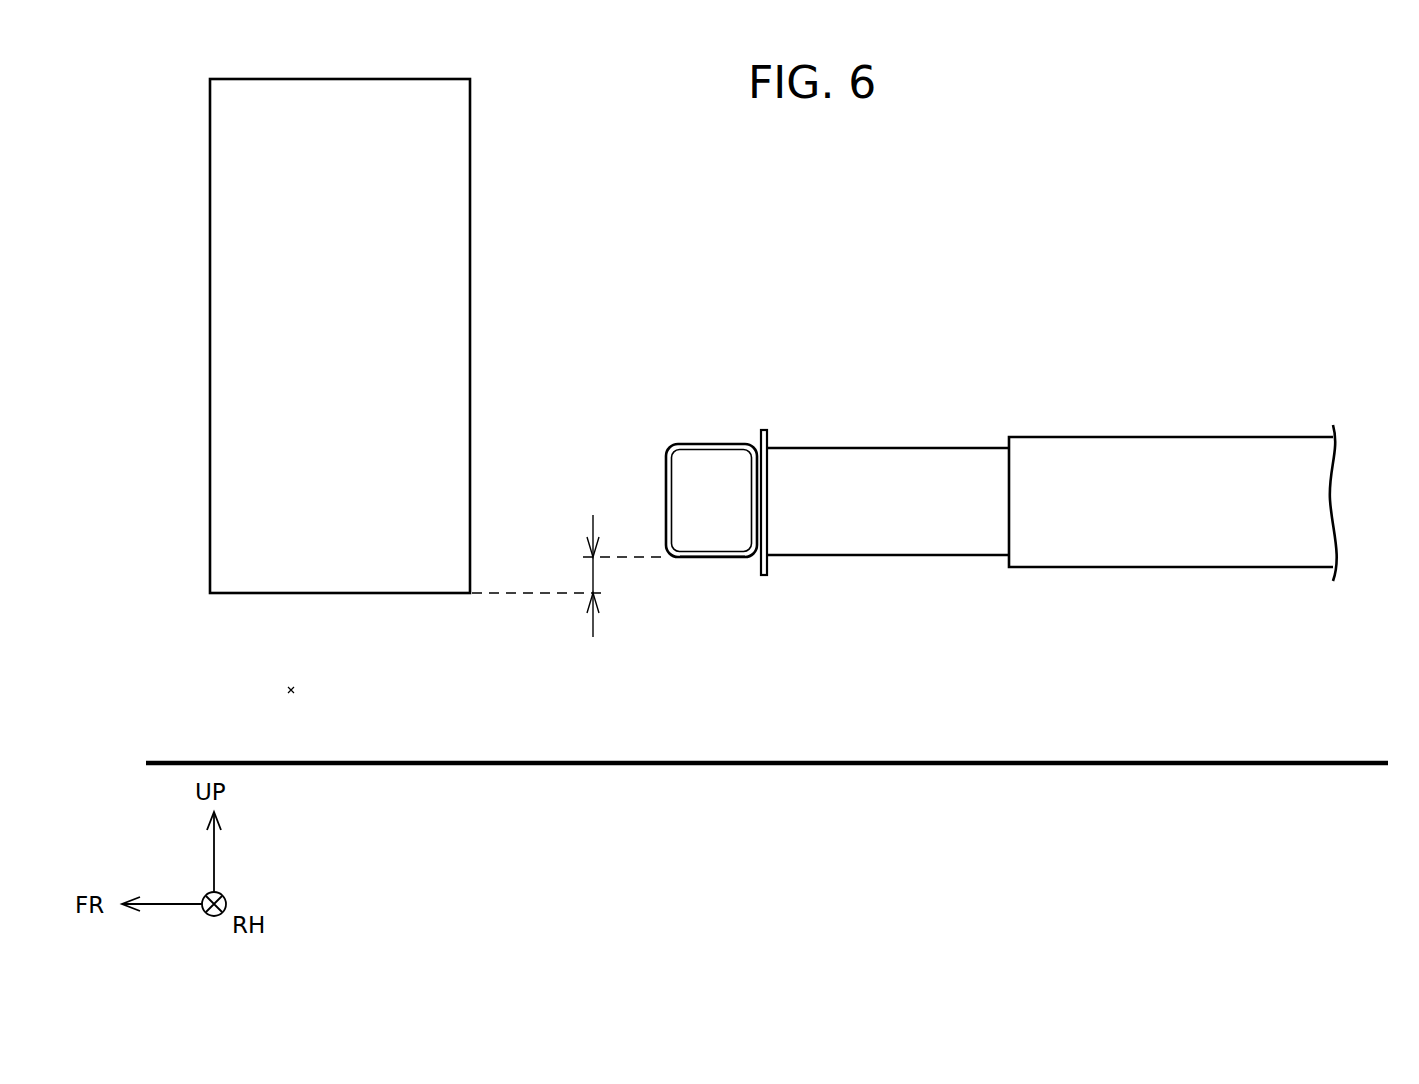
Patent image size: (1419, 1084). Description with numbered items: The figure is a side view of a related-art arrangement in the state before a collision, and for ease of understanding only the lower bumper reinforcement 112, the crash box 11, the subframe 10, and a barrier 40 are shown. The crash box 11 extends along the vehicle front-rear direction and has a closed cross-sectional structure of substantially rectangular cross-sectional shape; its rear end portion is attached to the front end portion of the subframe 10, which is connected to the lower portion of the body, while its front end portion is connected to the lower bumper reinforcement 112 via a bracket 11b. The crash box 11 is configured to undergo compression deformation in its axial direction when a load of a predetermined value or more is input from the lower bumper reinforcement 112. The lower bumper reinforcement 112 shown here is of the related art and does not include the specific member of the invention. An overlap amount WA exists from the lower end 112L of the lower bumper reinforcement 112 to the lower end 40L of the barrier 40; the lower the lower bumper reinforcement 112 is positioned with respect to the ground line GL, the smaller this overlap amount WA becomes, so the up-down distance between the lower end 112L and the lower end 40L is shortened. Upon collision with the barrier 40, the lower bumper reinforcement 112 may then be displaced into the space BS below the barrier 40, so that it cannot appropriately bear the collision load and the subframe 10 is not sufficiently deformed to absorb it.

The subframe 10 is at (1150, 458).
The crash box 11 is at (875, 472).
The bracket 11b is at (764, 428).
The lower bumper reinforcement 112 is at (694, 415).
The lower end of the lower bumper reinforcement 112L is at (717, 558).
The barrier 40 is at (233, 287).
The lower end of the barrier 40L is at (282, 596).
The space below the barrier BS is at (290, 689).
The overlap amount WA is at (593, 575).
The ground line GL is at (1315, 760).